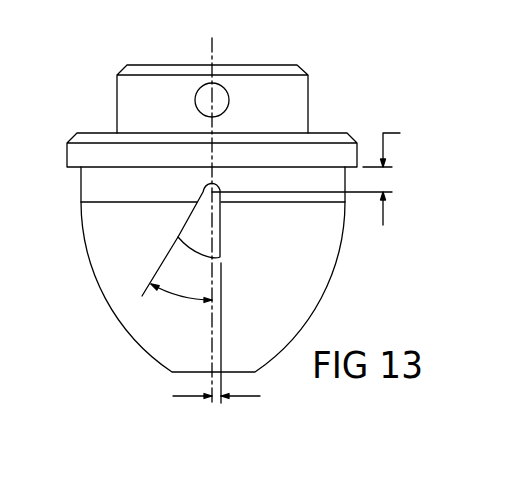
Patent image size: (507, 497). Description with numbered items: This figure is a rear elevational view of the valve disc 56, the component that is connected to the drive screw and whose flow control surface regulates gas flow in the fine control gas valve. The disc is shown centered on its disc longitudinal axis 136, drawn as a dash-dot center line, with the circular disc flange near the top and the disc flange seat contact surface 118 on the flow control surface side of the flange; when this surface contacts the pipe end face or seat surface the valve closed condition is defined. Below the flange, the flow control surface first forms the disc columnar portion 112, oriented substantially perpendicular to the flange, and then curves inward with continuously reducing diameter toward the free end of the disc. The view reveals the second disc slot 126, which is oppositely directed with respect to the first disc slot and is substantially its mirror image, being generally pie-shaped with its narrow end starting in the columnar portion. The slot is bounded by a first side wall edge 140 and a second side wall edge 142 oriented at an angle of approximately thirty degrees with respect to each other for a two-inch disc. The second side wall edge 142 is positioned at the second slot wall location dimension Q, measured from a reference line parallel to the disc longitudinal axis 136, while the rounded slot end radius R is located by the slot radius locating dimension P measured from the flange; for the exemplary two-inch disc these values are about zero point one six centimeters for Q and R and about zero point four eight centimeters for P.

The valve disc 56 is at (334, 85).
The disc longitudinal axis 136 is at (205, 50).
The disc flange seat contact surface 118 is at (69, 174).
The disc columnar portion 112 is at (98, 190).
The second disc slot 126 is at (195, 194).
The first side wall edge 140 is at (179, 219).
The second side wall edge 142 is at (222, 220).
The slot end radius R is at (224, 180).
The slot radius locating dimension P is at (312, 174).
The second slot wall location dimension Q is at (224, 396).